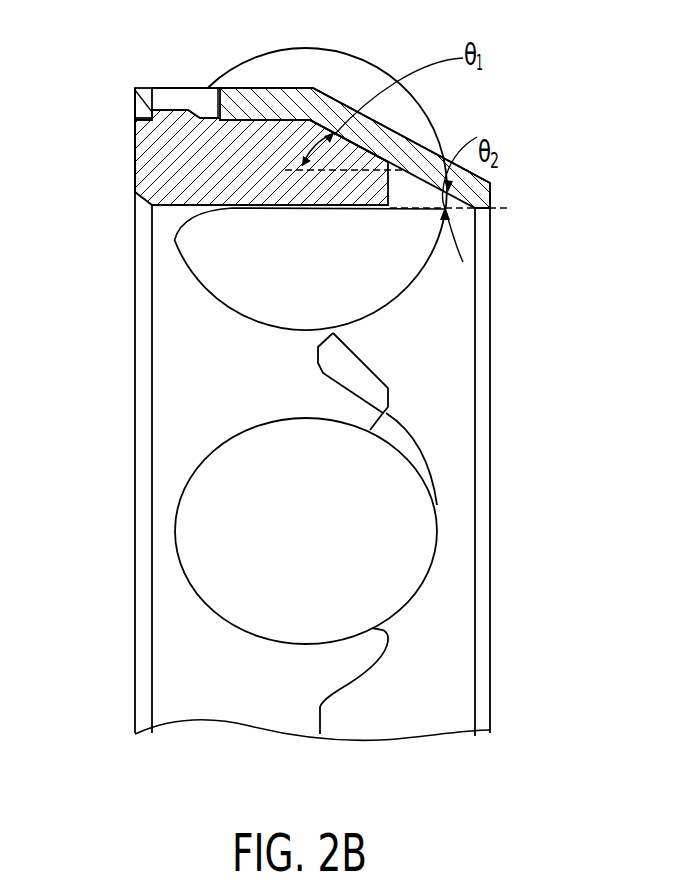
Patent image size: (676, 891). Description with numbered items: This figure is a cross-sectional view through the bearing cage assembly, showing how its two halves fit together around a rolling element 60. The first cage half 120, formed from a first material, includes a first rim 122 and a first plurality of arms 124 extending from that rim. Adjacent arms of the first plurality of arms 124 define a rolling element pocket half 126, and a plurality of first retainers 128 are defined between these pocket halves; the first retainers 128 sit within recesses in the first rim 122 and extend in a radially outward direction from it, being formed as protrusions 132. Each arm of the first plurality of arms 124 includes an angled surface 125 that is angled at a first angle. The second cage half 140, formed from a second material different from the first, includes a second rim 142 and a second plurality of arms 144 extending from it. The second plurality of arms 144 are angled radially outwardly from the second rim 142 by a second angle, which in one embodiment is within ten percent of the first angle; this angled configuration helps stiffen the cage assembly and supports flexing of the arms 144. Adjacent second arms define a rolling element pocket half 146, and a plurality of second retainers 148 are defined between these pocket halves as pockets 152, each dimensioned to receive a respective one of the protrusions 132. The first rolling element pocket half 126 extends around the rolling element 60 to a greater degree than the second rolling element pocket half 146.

The rolling elements 60 is at (440, 535).
The first cage half 120 is at (128, 360).
The first rim 122 is at (152, 500).
The first plurality of arms 124 is at (240, 375).
The angled surface 125 is at (360, 146).
The rolling element pocket half 126 is at (190, 583).
The first retainers 128 is at (145, 150).
The protrusions 132 is at (152, 96).
The second cage half 140 is at (497, 369).
The second rim 142 is at (475, 658).
The second plurality of arms 144 is at (314, 92).
The rolling element pocket half 146 is at (440, 487).
The second retainers 148 is at (202, 87).
The pockets 152 is at (170, 110).